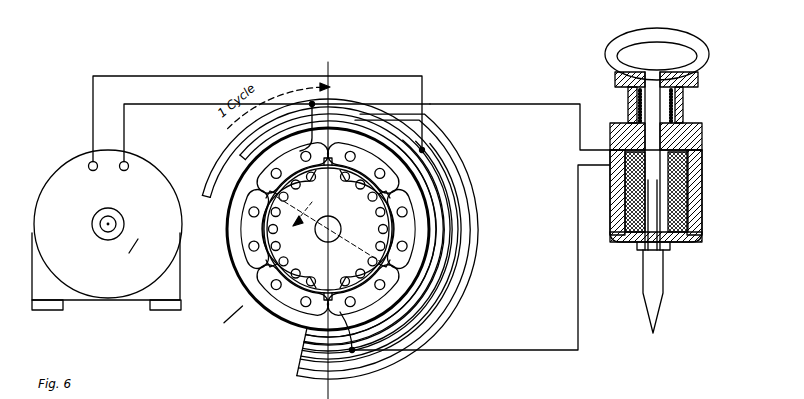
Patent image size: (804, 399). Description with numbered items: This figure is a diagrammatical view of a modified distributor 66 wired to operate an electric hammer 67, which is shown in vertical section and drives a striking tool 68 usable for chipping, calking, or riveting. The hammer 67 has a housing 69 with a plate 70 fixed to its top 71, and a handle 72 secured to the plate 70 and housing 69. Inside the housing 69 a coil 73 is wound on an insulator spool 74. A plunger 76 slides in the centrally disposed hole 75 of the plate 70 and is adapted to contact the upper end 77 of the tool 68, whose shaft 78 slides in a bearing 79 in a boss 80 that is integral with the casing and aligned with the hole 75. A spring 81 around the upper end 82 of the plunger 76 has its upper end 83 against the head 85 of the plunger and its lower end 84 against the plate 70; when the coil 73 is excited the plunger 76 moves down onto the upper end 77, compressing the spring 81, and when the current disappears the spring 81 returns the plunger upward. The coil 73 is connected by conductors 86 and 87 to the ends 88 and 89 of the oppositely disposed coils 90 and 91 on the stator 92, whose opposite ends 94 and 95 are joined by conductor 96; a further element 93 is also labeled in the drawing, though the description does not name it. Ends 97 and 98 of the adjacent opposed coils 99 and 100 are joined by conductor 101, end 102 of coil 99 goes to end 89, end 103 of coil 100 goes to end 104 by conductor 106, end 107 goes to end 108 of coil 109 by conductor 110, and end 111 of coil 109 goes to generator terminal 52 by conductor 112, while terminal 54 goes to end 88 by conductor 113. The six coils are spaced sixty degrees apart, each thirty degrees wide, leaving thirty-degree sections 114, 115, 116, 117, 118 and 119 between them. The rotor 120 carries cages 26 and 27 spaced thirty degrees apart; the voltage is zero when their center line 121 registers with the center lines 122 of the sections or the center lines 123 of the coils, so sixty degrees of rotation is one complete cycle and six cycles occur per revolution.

The cage 26 is at (288, 250).
The cage 27 is at (364, 250).
The terminal 52 is at (92, 170).
The terminal 54 is at (128, 170).
The distributor 66 is at (418, 178).
The hammer 67 is at (702, 172).
The striking tool 68 is at (663, 288).
The housing 69 is at (702, 238).
The plate 70 is at (702, 140).
The top 71 is at (702, 153).
The handle 72 is at (690, 48).
The coil 73 is at (688, 196).
The insulator spool 74 is at (688, 212).
The hole 75 is at (702, 120).
The plunger 76 is at (653, 161).
The upper end 77 is at (628, 180).
The shaft 78 is at (657, 236).
The bearing 79 is at (636, 192).
The boss 80 is at (640, 210).
The spring 81 is at (630, 106).
The upper end 82 is at (683, 95).
The upper end 83 is at (630, 95).
The lower end 84 is at (612, 126).
The head 85 is at (615, 80).
The conductor 86 is at (508, 106).
The conductor 87 is at (505, 352).
The end 88 is at (309, 110).
The end 89 is at (341, 331).
The coil 90 is at (292, 168).
The coil 91 is at (363, 290).
The stator 92 is at (413, 187).
The stator coil 93 is at (292, 290).
The end 94 is at (262, 172).
The end 95 is at (400, 286).
The conductor 96 is at (236, 160).
The end 97 is at (222, 258).
The end 98 is at (428, 199).
The coil 99 is at (253, 229).
The coil 100 is at (409, 229).
The conductor 101 is at (406, 232).
The end 102 is at (222, 190).
The end 103 is at (412, 255).
The end 104 is at (232, 316).
The conductor 106 is at (270, 358).
The end 107 is at (298, 376).
The end 108 is at (388, 138).
The coil 109 is at (363, 168).
The conductor 110 is at (470, 190).
The end 111 is at (422, 152).
The conductor 112 is at (246, 82).
The conductor 113 is at (208, 101).
The section 114 is at (330, 160).
The section 115 is at (257, 189).
The section 116 is at (266, 270).
The section 117 is at (329, 301).
The section 118 is at (395, 268).
The section 119 is at (395, 189).
The rotor 120 is at (344, 229).
The center line 121 is at (330, 200).
The center line 122 is at (334, 72).
The center line 123 is at (282, 153).